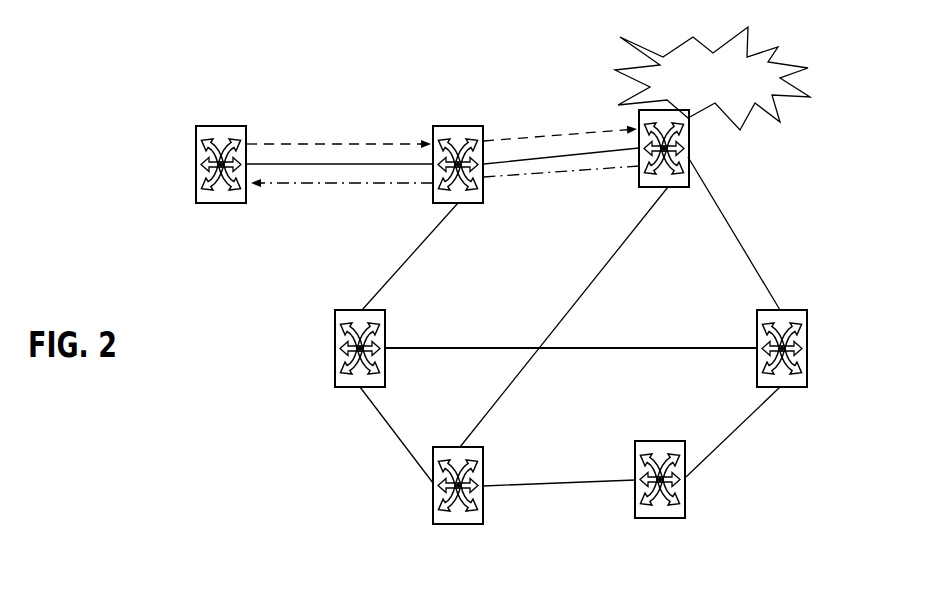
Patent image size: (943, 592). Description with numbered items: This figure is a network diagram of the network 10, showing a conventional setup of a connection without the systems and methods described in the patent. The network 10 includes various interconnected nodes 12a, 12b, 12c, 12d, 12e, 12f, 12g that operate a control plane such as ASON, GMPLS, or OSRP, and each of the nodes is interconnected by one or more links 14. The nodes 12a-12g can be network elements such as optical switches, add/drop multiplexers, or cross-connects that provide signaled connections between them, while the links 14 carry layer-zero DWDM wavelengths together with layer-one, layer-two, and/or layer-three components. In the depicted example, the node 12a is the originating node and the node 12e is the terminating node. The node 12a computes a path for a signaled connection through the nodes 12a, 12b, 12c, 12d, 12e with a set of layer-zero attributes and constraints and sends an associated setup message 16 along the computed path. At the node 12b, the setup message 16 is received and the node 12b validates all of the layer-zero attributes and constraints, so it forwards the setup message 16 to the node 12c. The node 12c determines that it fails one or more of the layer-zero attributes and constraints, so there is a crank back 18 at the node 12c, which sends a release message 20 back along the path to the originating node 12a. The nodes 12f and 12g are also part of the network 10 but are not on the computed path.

The network 10 is at (787, 158).
The node 12a is at (196, 196).
The node 12b is at (432, 190).
The node 12c is at (673, 188).
The node 12d is at (793, 310).
The node 12e is at (640, 508).
The node 12f is at (440, 523).
The node 12g is at (345, 387).
The link 14 is at (437, 346).
The setup message 16 is at (342, 146).
The crank back 18 is at (758, 48).
The release message 20 is at (337, 183).